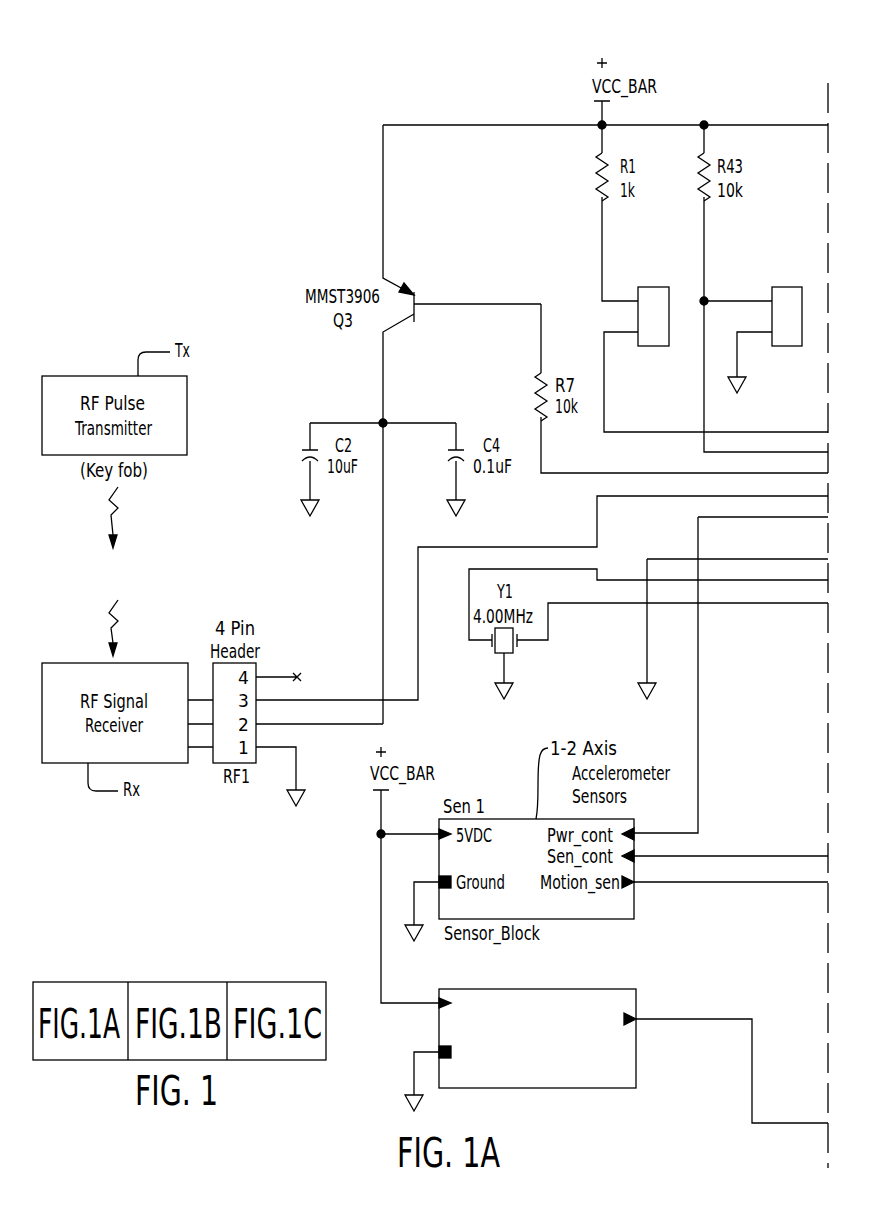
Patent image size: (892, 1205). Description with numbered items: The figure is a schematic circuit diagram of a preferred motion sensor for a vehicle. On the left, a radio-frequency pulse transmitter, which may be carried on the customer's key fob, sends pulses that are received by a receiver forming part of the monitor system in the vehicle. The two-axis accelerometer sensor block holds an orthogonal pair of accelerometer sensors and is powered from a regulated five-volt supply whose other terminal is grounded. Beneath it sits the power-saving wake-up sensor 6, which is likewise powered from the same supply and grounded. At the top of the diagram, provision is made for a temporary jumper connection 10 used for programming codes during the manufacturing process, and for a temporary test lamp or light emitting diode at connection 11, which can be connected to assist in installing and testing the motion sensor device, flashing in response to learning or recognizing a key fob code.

The power-saving wake-up sensor 6 is at (538, 1088).
The temporary jumper connection 10 is at (775, 287).
The temporary test lamp or LED connection 11 is at (663, 287).